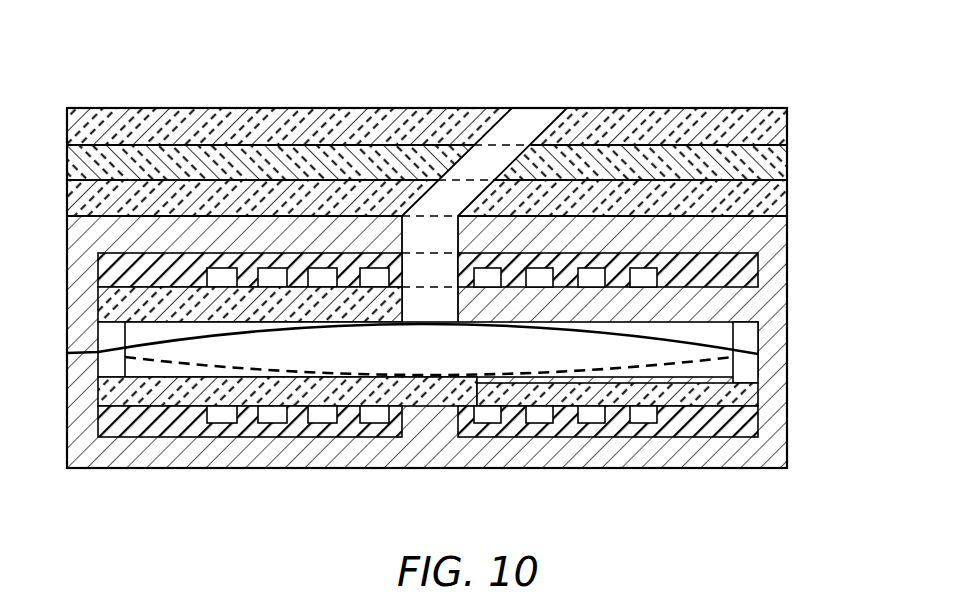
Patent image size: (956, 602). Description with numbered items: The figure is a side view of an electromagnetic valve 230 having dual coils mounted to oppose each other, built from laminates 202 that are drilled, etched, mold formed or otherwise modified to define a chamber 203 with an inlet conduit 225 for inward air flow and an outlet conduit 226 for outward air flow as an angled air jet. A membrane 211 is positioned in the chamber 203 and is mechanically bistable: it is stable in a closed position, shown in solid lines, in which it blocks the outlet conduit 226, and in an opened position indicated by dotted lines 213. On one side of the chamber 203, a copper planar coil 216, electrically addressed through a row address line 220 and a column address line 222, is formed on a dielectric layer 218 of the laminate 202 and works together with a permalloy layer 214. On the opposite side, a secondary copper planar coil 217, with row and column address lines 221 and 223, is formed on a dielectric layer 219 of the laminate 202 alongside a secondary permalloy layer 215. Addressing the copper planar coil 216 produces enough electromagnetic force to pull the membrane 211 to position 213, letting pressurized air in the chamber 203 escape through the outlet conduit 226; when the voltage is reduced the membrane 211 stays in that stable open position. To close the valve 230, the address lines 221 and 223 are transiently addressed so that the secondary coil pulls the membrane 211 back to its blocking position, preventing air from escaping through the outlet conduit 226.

The laminate 202 is at (197, 397).
The chamber 203 is at (715, 333).
The membrane 211 is at (736, 325).
The opened position 213 is at (712, 362).
The permalloy layer 214 is at (775, 432).
The secondary permalloy layer 215 is at (763, 259).
The copper planar coil 216 is at (644, 420).
The secondary copper planar coil 217 is at (644, 273).
The dielectric layer 218 is at (737, 428).
The dielectric layer 219 is at (157, 268).
The row address line 220 is at (690, 383).
The row address line 221 is at (670, 318).
The column address line 222 is at (223, 418).
The column address line 223 is at (227, 272).
The inlet conduit 225 is at (144, 430).
The outlet conduit 226 is at (526, 125).
The electromagnetic valve 230 is at (749, 60).